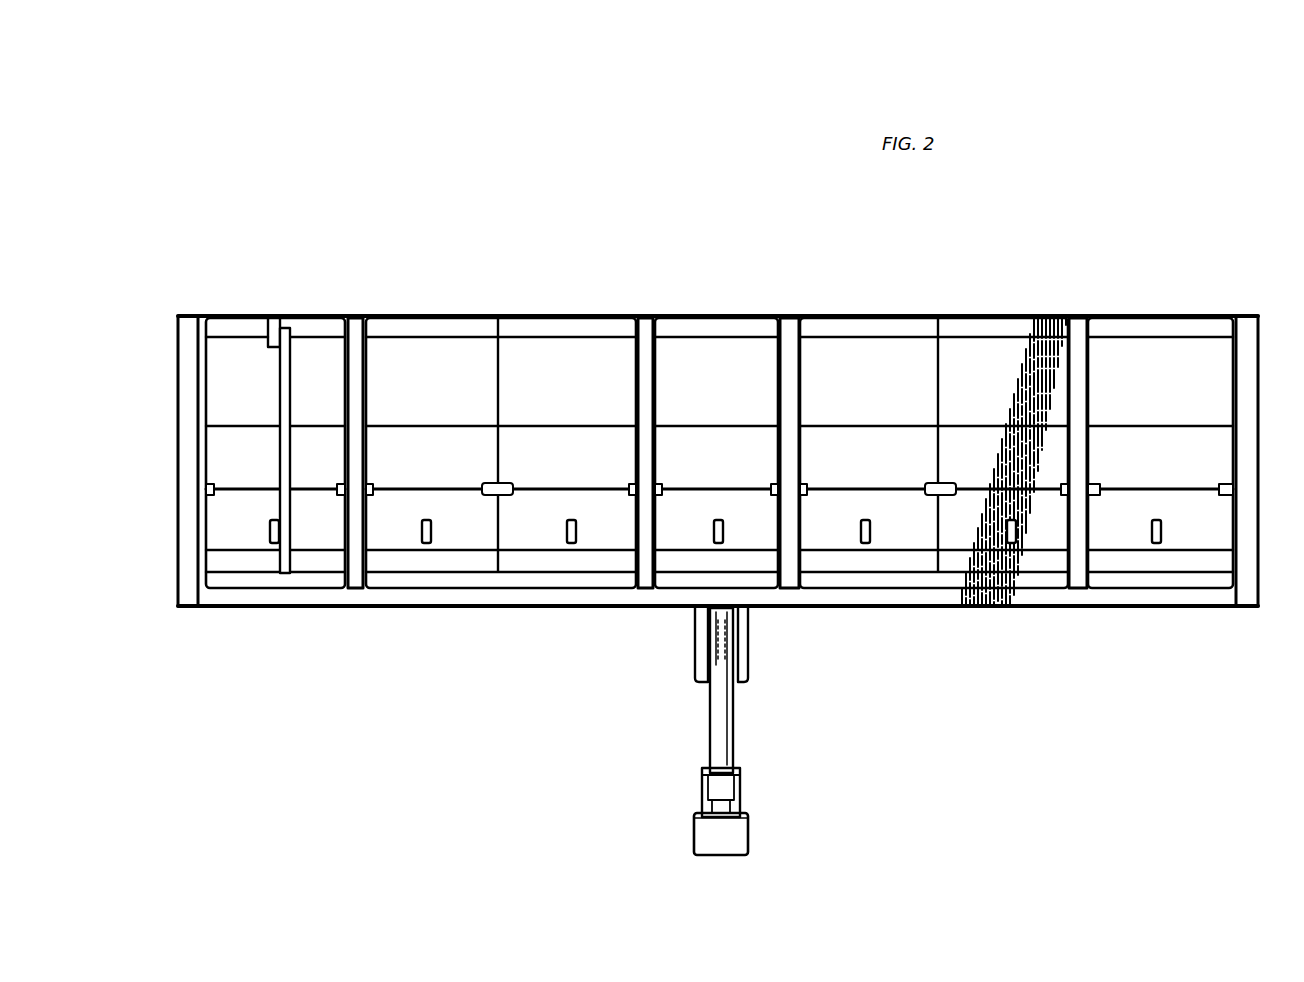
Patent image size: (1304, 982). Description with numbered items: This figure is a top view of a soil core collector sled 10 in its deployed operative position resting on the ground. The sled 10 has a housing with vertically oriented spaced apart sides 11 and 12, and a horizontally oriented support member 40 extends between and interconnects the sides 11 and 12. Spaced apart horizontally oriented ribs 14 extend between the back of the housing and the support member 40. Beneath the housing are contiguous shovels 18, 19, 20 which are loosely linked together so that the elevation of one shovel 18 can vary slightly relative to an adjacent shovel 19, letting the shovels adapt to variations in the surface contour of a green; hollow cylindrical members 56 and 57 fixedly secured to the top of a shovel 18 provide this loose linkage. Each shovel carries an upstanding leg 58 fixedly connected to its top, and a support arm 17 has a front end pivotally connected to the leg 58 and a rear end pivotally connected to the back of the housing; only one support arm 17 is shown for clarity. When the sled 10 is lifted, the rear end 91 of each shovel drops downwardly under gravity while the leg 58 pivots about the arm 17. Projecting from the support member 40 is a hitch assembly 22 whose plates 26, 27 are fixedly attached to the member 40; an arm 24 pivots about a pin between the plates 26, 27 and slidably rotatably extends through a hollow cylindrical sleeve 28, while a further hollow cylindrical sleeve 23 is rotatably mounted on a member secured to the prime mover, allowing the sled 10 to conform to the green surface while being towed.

The soil core collector sled 10 is at (688, 234).
The side 11 is at (1238, 332).
The side 12 is at (187, 326).
The rib 14 is at (360, 352).
The support arm 17 is at (291, 352).
The shovel 18 is at (252, 392).
The shovel 19 is at (442, 392).
The shovel 20 is at (572, 392).
The hitch assembly 22 is at (670, 745).
The hollow cylindrical sleeve 23 is at (750, 820).
The arm 24 is at (735, 748).
The plate 26 is at (750, 670).
The plate 27 is at (696, 648).
The hollow cylindrical sleeve 28 is at (742, 790).
The support member 40 is at (332, 609).
The hollow cylindrical member 56 is at (213, 487).
The hollow cylindrical member 57 is at (334, 487).
The leg 58 is at (272, 544).
The rear end 91 is at (715, 340).